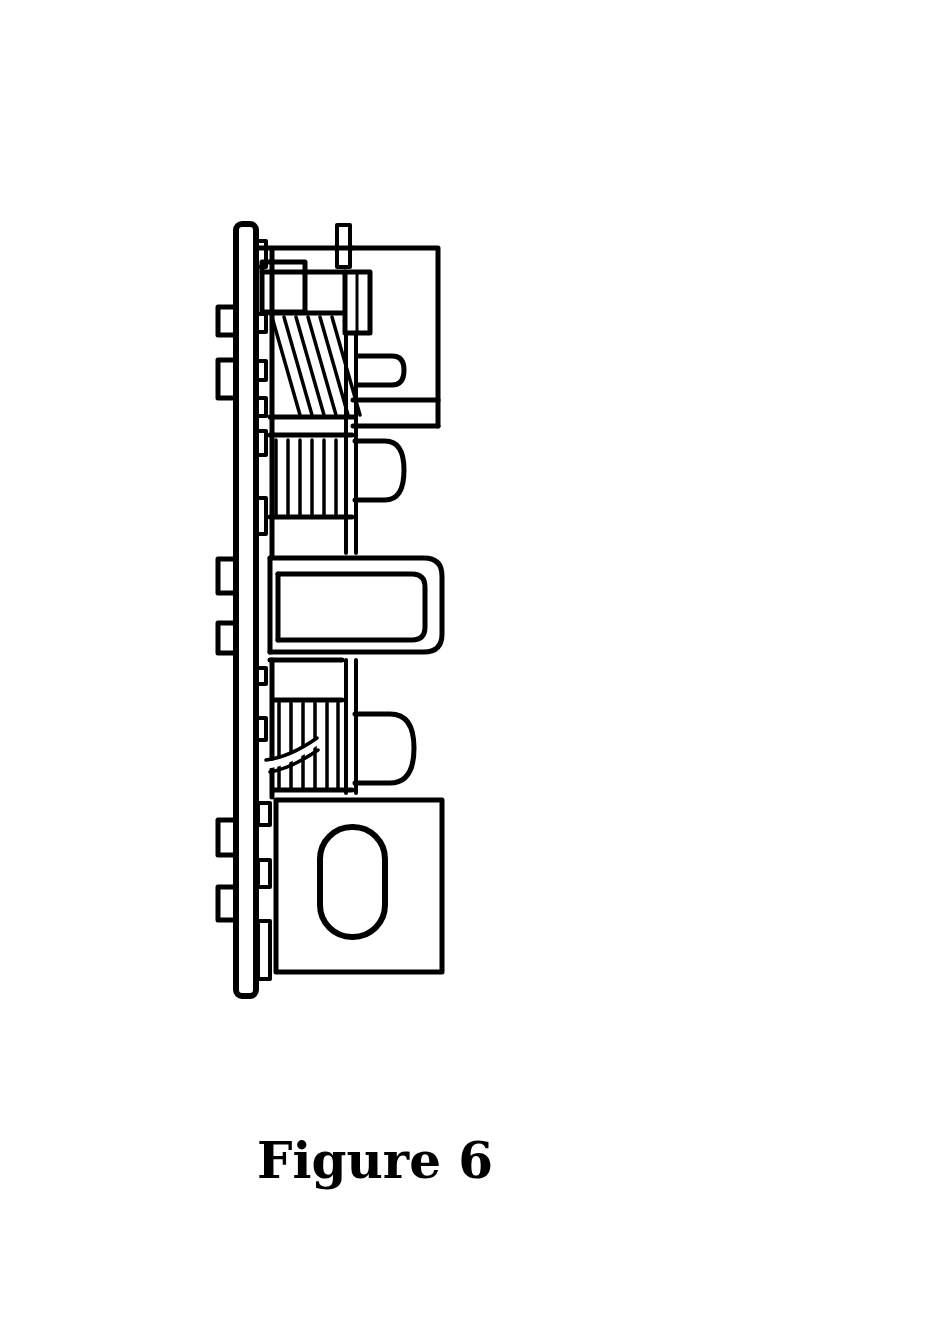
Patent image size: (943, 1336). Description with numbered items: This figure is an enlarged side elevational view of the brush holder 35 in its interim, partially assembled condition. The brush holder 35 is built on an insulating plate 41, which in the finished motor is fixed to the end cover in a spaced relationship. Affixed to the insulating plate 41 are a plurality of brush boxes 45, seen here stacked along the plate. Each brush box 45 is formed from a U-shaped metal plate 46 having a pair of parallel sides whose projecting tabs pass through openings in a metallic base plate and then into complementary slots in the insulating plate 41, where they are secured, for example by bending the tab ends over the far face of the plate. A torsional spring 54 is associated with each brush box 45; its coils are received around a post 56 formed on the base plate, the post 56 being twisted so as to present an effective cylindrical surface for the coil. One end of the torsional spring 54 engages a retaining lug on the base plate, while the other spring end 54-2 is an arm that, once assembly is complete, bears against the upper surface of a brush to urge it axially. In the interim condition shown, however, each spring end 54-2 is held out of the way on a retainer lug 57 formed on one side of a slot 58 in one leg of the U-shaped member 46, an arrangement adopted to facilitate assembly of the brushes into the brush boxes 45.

The brush holder 35 is at (178, 338).
The insulating plate 41 is at (241, 222).
The brush box 45 is at (465, 287).
The U-shaped metal plate 46 is at (440, 260).
The torsional spring 54 is at (420, 400).
The spring end 54-2 is at (349, 226).
The post 56 is at (405, 370).
The retainer lug 57 is at (322, 248).
The slot 58 is at (284, 252).